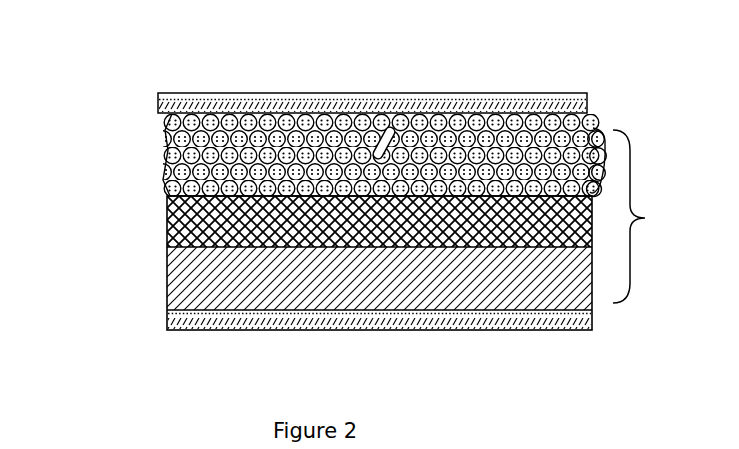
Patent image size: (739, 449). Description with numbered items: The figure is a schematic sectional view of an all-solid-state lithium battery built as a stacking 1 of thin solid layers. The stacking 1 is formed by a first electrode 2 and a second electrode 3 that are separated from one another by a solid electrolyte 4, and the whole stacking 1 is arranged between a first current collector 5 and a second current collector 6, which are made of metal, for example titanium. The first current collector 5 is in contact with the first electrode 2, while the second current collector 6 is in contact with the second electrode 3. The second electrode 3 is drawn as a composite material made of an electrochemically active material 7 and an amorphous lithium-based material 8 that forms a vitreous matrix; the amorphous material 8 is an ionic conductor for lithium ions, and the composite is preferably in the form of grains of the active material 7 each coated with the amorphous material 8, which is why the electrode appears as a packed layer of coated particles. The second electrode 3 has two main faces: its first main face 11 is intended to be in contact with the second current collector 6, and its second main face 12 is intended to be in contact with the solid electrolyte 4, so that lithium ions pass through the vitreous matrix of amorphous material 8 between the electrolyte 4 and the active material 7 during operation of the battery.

The stacking 1 is at (426, 230).
The first electrode 2 is at (300, 280).
The second electrode 3 is at (160, 148).
The solid electrolyte 4 is at (176, 229).
The first current collector 5 is at (166, 327).
The second current collector 6 is at (158, 103).
The electrochemically active material 7 is at (596, 120).
The amorphous lithium-based material 8 is at (370, 112).
The first main face 11 is at (232, 117).
The second main face 12 is at (238, 196).